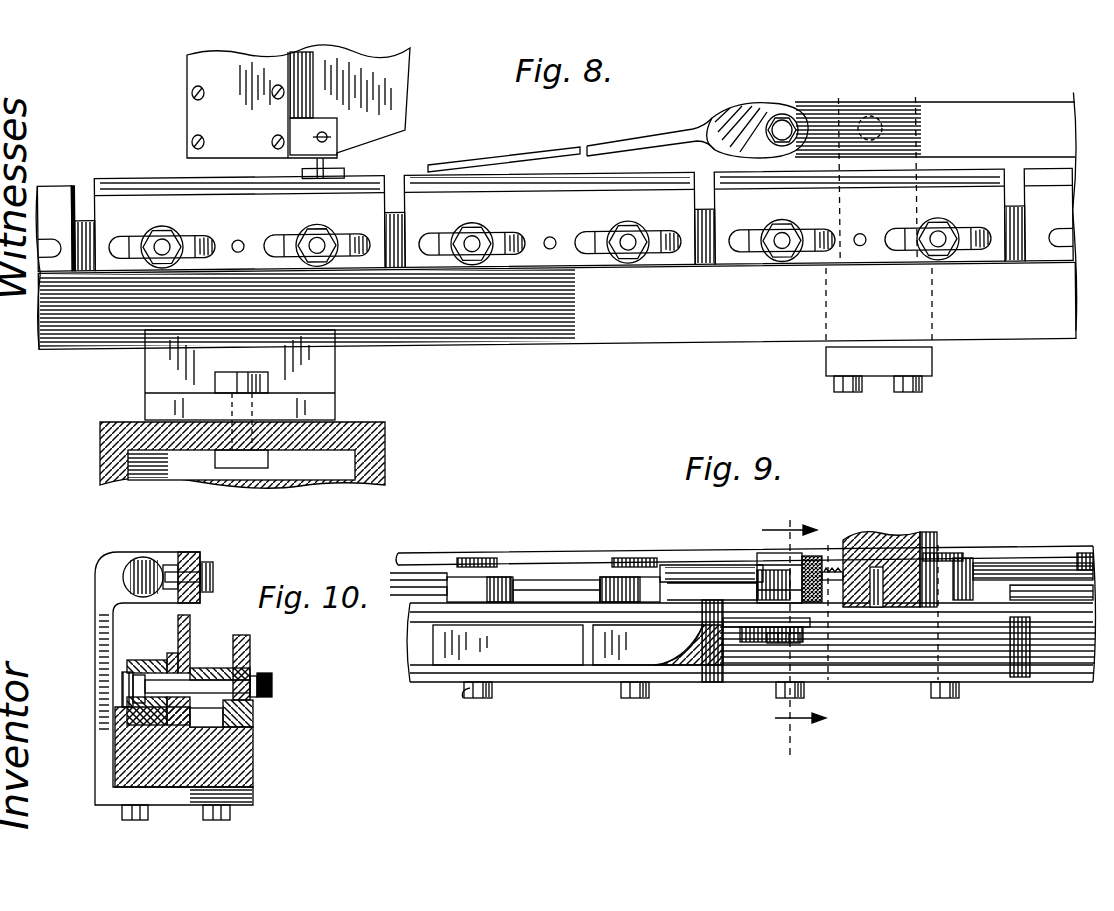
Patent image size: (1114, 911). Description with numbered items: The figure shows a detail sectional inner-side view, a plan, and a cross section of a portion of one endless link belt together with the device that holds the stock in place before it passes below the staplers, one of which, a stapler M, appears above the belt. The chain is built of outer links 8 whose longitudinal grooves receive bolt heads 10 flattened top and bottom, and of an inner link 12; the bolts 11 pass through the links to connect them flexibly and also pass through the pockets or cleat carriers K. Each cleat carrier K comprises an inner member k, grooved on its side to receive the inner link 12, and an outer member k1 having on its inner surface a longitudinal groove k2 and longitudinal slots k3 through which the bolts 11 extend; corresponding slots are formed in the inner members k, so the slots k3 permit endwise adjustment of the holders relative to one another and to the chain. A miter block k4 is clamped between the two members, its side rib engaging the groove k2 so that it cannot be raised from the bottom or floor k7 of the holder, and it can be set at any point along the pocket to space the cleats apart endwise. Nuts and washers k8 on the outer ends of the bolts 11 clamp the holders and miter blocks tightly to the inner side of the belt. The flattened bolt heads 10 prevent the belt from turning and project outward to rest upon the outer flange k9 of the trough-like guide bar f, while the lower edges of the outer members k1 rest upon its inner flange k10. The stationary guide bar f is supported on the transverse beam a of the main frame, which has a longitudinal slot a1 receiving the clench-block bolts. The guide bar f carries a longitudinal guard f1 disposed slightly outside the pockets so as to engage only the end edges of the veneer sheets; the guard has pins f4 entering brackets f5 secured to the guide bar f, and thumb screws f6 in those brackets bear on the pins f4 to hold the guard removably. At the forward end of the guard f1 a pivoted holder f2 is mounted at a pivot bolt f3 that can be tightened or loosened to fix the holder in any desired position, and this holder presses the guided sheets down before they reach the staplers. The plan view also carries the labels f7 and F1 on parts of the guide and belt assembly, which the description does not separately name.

In FIG. 8, the stapler M is at (187, 118).
In FIG. 8, the inner member k is at (137, 192).
In FIG. 10, the inner member k is at (150, 728).
In FIG. 8, the outer member k1 is at (400, 182).
In FIG. 10, the outer member k1 is at (200, 725).
In FIG. 10, the longitudinal groove k2 is at (252, 645).
In FIG. 8, the longitudinal slots k3 is at (48, 250).
In FIG. 8, the miter block k4 is at (1060, 262).
In FIG. 9, the bottom or floor k7 is at (408, 668).
In FIG. 10, the bottom or floor k7 is at (210, 672).
In FIG. 8, the nuts and washers k8 is at (172, 247).
In FIG. 9, the nuts and washers k8 is at (492, 688).
In FIG. 10, the nuts and washers k8 is at (272, 676).
In FIG. 8, the outer flange k9 is at (328, 176).
In FIG. 9, the outer flange k9 is at (605, 575).
In FIG. 10, the outer flange k9 is at (145, 718).
In FIG. 9, the inner flange k10 is at (712, 675).
In FIG. 10, the inner flange k10 is at (235, 722).
In FIG. 9, the cleat carrier K is at (751, 613).
In FIG. 8, the bolts 11 is at (320, 247).
In FIG. 9, the bolts 11 is at (478, 700).
In FIG. 10, the bolts 11 is at (222, 680).
In FIG. 10, the inner link 12 is at (258, 697).
In FIG. 9, the bolt heads 10 is at (483, 558).
In FIG. 10, the bolt heads 10 is at (122, 688).
In FIG. 9, the outer links 8 is at (527, 577).
In FIG. 10, the outer links 8 is at (133, 672).
In FIG. 8, the guide bar f is at (668, 338).
In FIG. 9, the guide bar f is at (683, 562).
In FIG. 10, the guide bar f is at (113, 790).
In FIG. 8, the guard f1 is at (975, 114).
In FIG. 9, the guard f1 is at (975, 612).
In FIG. 10, the guard f1 is at (183, 552).
In FIG. 8, the pivoted holder f2 is at (652, 148).
In FIG. 10, the pivoted holder f2 is at (190, 565).
In FIG. 8, the pivot bolt f3 is at (783, 128).
In FIG. 9, the pivot bolt f3 is at (783, 643).
In FIG. 10, the pivot bolt f3 is at (213, 577).
In FIG. 8, the pins f4 is at (880, 120).
In FIG. 9, the pins f4 is at (878, 570).
In FIG. 8, the brackets f5 is at (922, 158).
In FIG. 9, the brackets f5 is at (870, 548).
In FIG. 9, the thumb screws f6 is at (813, 556).
In FIG. 10, the thumb screws f6 is at (143, 560).
In FIG. 9, the bar f7 is at (543, 638).
In FIG. 9, the frame F1 is at (718, 592).
In FIG. 8, the transverse supporting beam a is at (372, 460).
In FIG. 8, the longitudinal slot a1 is at (318, 418).